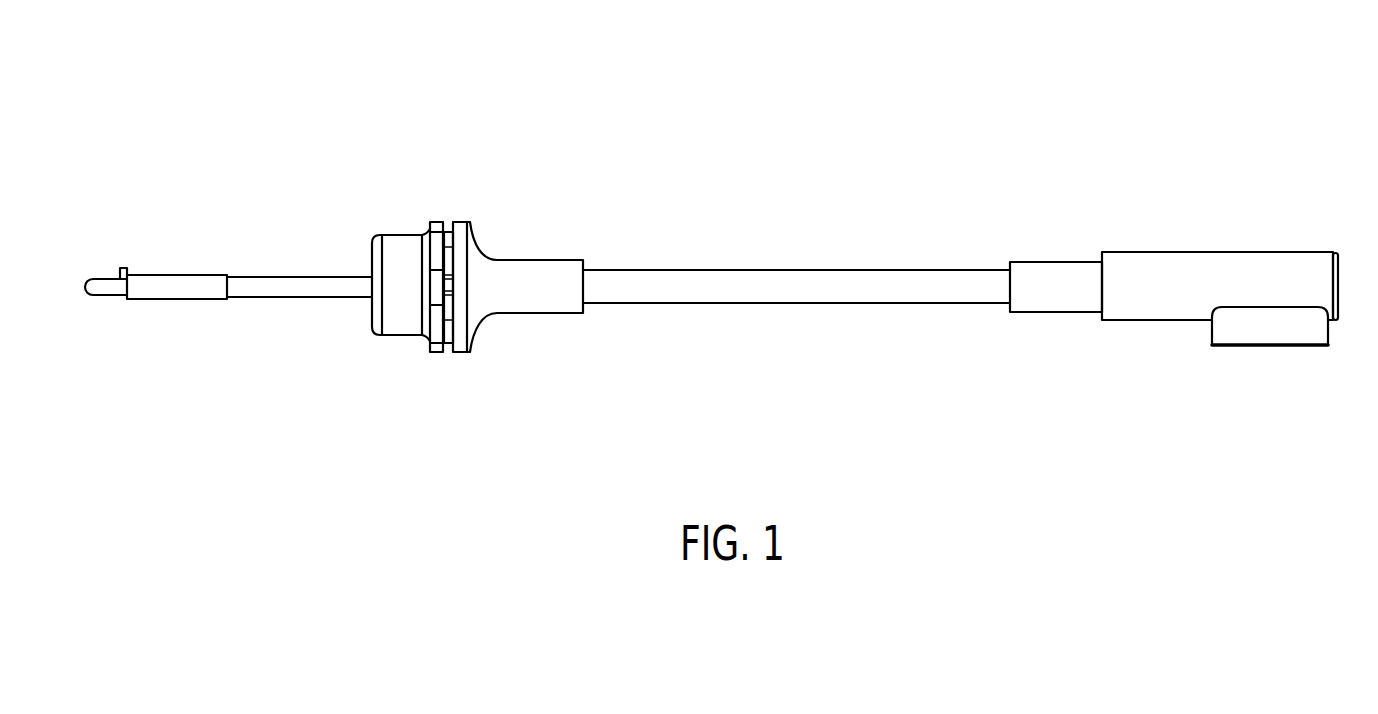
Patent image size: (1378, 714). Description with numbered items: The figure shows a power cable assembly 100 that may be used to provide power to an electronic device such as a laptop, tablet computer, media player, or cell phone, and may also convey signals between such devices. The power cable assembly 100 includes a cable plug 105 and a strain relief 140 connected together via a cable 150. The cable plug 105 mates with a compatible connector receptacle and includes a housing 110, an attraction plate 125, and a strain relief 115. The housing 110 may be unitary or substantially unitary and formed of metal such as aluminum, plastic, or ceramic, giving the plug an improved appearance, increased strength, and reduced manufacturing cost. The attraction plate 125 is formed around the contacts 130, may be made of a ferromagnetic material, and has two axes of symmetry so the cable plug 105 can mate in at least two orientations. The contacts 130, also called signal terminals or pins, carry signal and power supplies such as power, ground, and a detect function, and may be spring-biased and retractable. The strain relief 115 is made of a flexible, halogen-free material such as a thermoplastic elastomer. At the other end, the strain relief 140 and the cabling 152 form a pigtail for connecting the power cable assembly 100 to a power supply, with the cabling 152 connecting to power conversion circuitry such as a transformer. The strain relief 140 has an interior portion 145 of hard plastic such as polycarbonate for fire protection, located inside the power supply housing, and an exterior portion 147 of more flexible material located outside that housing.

The power cable assembly 100 is at (877, 75).
The cable plug 105 is at (1167, 215).
The housing 110 is at (1253, 260).
The strain relief 115 is at (1057, 268).
The attraction plate 125 is at (1226, 325).
The contacts 130 is at (1270, 356).
The strain relief 140 is at (452, 362).
The interior portion 145 is at (405, 240).
The exterior portion 147 is at (480, 250).
The cable 150 is at (767, 285).
The cabling 152 is at (280, 298).